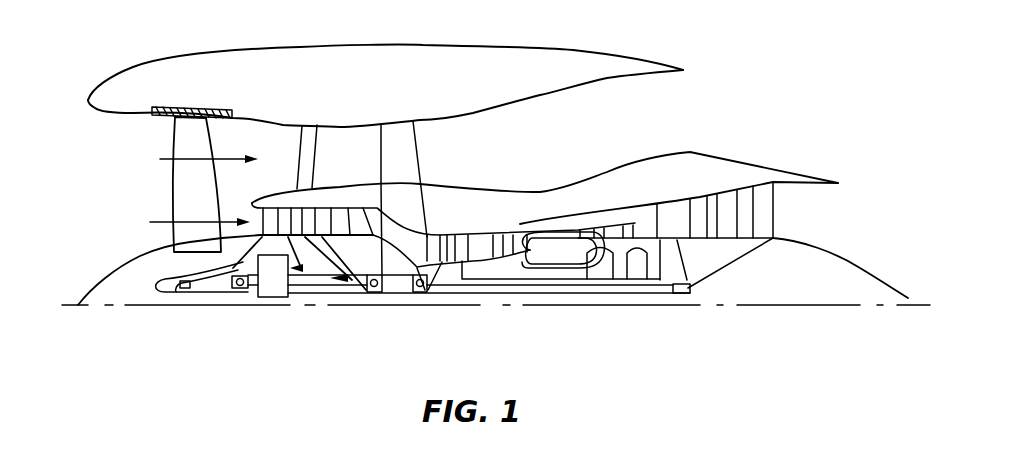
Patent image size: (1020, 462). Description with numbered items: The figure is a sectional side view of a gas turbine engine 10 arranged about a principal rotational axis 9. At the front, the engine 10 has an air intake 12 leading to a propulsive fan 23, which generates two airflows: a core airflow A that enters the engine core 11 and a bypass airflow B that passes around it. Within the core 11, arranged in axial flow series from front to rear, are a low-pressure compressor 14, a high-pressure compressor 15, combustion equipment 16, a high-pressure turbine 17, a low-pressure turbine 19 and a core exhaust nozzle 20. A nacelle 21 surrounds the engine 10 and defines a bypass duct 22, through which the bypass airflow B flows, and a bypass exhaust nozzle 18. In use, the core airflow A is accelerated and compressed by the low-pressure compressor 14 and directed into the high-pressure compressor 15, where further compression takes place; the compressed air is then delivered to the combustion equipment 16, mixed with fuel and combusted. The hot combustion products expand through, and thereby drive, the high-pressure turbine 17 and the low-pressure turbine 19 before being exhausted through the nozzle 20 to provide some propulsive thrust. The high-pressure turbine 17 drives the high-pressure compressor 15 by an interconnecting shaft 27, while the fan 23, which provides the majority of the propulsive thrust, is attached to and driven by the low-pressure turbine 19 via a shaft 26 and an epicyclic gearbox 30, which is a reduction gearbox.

The principal rotational axis 9 is at (740, 307).
The gas turbine engine 10 is at (158, 62).
The engine core 11 is at (538, 212).
The air intake 12 is at (94, 153).
The low-pressure compressor 14 is at (342, 207).
The high-pressure compressor 15 is at (477, 230).
The combustion equipment 16 is at (566, 244).
The high-pressure turbine 17 is at (613, 227).
The bypass exhaust nozzle 18 is at (748, 108).
The low-pressure turbine 19 is at (748, 200).
The core exhaust nozzle 20 is at (813, 220).
The nacelle 21 is at (407, 62).
The bypass duct 22 is at (656, 122).
The propulsive fan 23 is at (178, 190).
The shaft 26 is at (473, 294).
The interconnecting shaft 27 is at (520, 281).
The epicyclic gearbox 30 is at (273, 280).